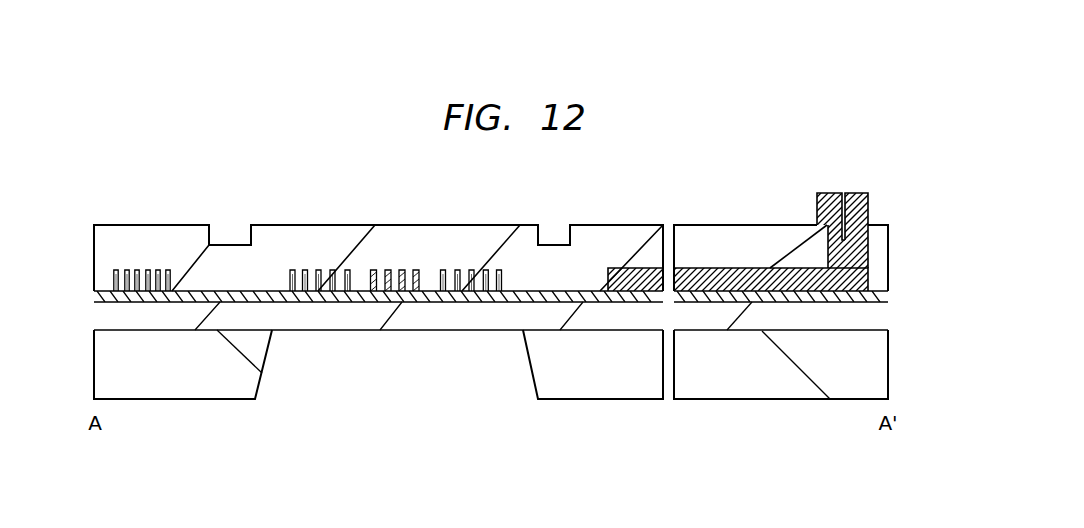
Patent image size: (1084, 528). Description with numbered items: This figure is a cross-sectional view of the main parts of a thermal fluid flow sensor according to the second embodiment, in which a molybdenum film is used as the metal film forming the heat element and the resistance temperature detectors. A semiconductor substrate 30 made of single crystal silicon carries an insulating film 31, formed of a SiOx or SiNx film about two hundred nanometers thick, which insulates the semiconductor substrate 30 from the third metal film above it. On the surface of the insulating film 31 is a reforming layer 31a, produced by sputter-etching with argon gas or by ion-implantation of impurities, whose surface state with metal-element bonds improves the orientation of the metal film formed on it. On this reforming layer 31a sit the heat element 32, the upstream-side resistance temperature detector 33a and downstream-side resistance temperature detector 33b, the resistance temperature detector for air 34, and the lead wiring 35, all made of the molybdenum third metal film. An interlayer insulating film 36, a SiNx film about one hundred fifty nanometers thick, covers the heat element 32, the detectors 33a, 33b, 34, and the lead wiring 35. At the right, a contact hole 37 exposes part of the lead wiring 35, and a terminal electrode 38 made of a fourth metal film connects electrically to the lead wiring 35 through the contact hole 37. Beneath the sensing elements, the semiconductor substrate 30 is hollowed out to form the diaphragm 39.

The semiconductor substrate 30 is at (203, 399).
The insulating film 31 is at (217, 302).
The reforming layer 31a is at (250, 291).
The heat element 32 is at (418, 253).
The upstream-side resistance temperature detector 33a is at (350, 253).
The downstream-side resistance temperature detector 33b is at (500, 253).
The resistance temperature detector for air 34 is at (172, 253).
The lead wiring 35 is at (618, 268).
The interlayer insulating film 36 is at (288, 225).
The contact hole 37 is at (826, 193).
The terminal electrode 38 is at (855, 193).
The diaphragm 39 is at (272, 331).